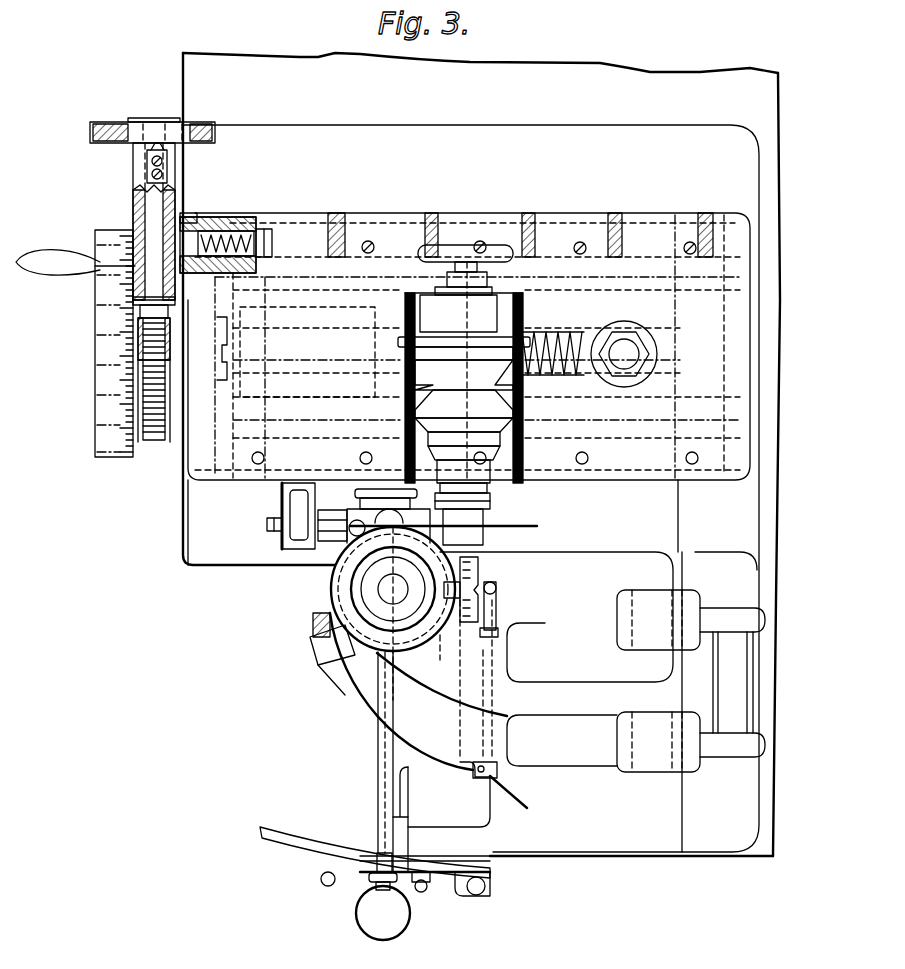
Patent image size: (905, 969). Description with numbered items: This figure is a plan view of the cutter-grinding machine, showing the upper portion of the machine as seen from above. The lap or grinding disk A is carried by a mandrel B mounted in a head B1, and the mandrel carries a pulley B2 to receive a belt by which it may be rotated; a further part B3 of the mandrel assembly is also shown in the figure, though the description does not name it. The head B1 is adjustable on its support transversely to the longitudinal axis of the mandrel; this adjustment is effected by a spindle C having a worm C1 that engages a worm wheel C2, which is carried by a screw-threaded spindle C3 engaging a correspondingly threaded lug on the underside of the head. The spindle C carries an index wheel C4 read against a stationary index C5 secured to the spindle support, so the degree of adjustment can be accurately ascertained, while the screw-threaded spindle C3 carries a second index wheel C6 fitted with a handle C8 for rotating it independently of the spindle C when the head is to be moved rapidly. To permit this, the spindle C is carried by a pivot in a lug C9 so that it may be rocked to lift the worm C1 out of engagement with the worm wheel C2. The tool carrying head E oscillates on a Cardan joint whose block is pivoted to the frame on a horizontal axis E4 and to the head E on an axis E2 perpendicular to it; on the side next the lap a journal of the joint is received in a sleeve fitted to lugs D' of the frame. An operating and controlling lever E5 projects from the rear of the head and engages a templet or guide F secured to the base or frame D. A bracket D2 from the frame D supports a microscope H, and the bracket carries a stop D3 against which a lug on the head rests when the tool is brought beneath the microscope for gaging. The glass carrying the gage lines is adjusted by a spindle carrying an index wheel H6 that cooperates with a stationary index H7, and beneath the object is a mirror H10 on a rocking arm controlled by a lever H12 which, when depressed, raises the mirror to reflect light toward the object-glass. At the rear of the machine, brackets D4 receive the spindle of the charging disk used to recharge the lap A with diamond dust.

The lap or grinding disk A is at (540, 527).
The mandrel B is at (500, 434).
The head B1 is at (485, 313).
The pulley B2 is at (495, 472).
The pulley flange B3 is at (420, 358).
The spindle C is at (150, 210).
The worm C1 is at (140, 348).
The worm wheel C2 is at (155, 438).
The screw-threaded spindle C3 is at (590, 319).
The index wheel C4 is at (126, 128).
The stationary index C5 is at (140, 148).
The index wheel C6 is at (103, 428).
The handle C8 is at (60, 271).
The lug C9 is at (203, 217).
The base or frame D is at (700, 702).
The lugs D' is at (375, 516).
The bracket D2 is at (377, 716).
The stop D3 is at (435, 708).
The brackets D4 is at (650, 597).
The tool carrying head E is at (313, 653).
The axis E2 is at (392, 520).
The horizontal axis E4 is at (204, 522).
The operating and controlling lever E5 is at (385, 797).
The templet or guide F is at (332, 863).
The microscope H is at (350, 593).
The index wheel H6 is at (488, 626).
The stationary index H7 is at (478, 578).
The mirror H10 is at (497, 592).
The lever H12 is at (521, 791).